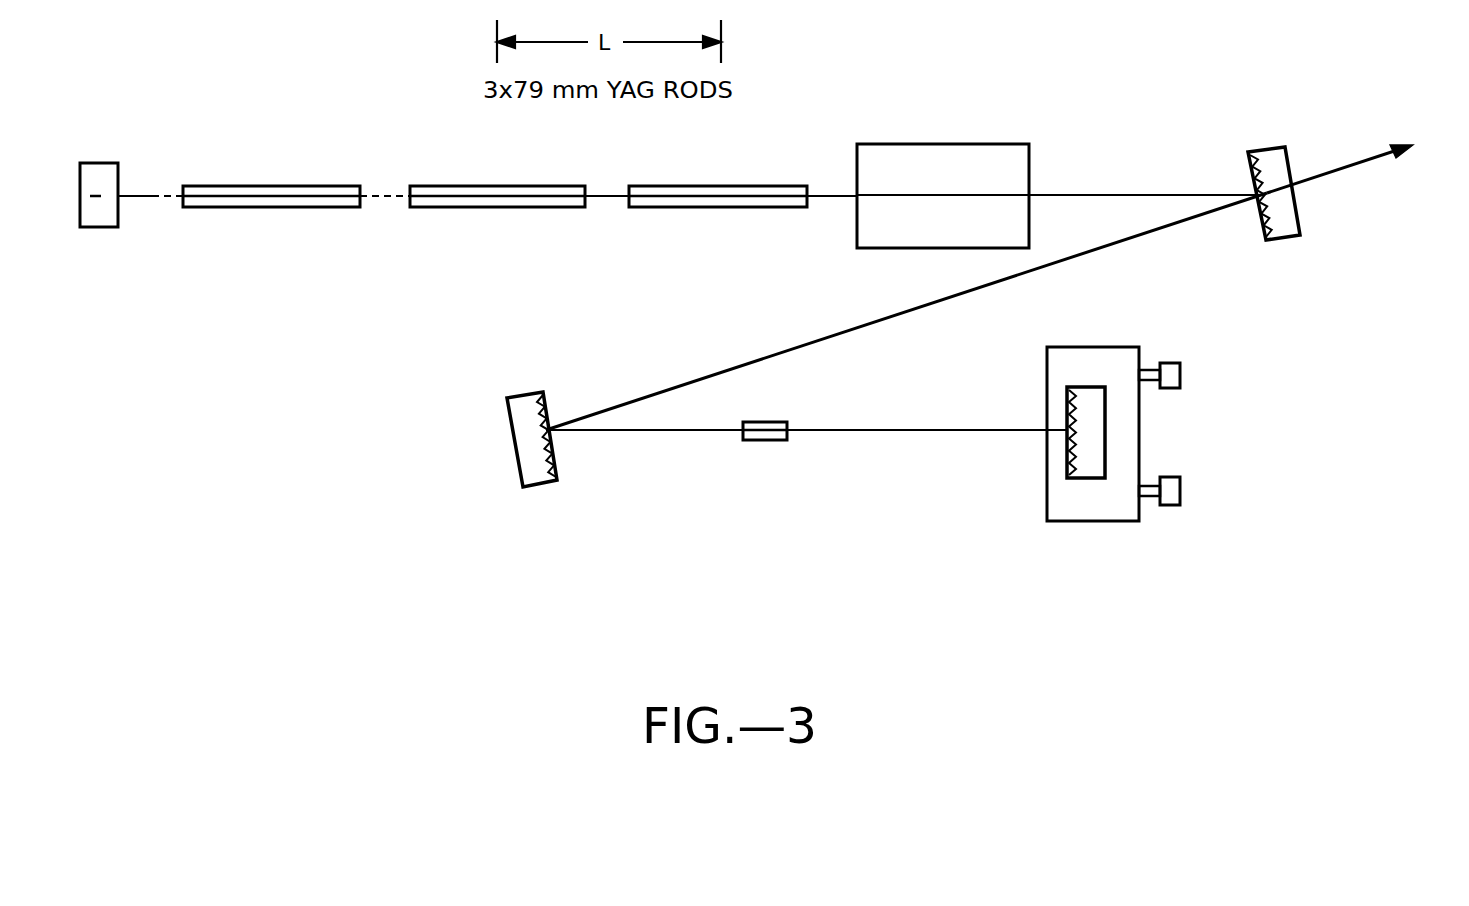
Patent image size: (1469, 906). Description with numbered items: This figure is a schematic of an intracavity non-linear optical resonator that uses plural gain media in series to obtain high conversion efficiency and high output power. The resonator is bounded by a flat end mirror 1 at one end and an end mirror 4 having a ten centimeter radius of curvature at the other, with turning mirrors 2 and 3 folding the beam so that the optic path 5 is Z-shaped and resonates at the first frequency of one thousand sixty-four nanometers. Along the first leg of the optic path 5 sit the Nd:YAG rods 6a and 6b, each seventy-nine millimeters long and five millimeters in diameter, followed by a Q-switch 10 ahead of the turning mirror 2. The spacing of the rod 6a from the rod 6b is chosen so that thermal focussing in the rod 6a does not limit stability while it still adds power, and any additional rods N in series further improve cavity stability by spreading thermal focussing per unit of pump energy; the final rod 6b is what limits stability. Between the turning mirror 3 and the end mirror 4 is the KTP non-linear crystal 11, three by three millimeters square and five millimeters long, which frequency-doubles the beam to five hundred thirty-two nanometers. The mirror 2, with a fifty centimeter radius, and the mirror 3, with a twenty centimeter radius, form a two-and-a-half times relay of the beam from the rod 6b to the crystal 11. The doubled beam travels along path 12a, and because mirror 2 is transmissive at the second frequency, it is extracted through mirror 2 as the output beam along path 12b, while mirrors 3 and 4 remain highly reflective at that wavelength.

The end mirror 1 is at (187, 182).
The optical path 5 is at (158, 197).
The additional rods N is at (271, 224).
The Nd:YAG rod 6a is at (497, 224).
The Nd:YAG rod 6b is at (718, 224).
The Q-switch 10 is at (970, 190).
The turning mirror 2 is at (1328, 259).
The path 12a is at (906, 311).
The path 12b is at (1340, 165).
The turning mirror 3 is at (583, 502).
The non-linear crystal 11 is at (806, 444).
The end mirror 4 is at (1154, 498).